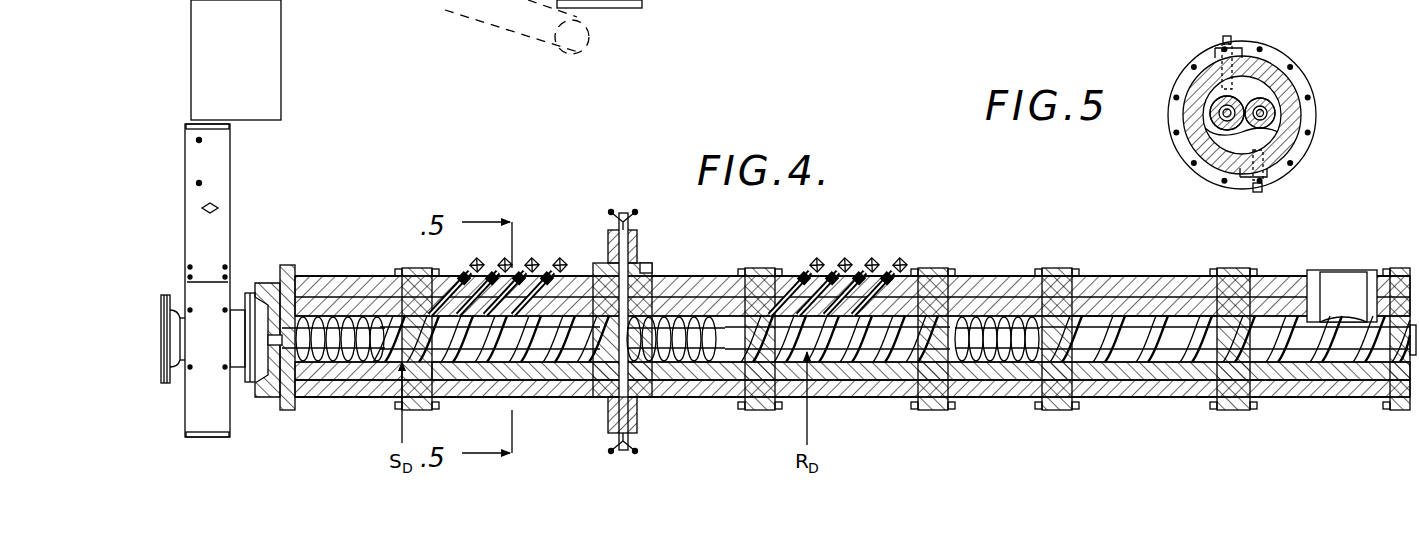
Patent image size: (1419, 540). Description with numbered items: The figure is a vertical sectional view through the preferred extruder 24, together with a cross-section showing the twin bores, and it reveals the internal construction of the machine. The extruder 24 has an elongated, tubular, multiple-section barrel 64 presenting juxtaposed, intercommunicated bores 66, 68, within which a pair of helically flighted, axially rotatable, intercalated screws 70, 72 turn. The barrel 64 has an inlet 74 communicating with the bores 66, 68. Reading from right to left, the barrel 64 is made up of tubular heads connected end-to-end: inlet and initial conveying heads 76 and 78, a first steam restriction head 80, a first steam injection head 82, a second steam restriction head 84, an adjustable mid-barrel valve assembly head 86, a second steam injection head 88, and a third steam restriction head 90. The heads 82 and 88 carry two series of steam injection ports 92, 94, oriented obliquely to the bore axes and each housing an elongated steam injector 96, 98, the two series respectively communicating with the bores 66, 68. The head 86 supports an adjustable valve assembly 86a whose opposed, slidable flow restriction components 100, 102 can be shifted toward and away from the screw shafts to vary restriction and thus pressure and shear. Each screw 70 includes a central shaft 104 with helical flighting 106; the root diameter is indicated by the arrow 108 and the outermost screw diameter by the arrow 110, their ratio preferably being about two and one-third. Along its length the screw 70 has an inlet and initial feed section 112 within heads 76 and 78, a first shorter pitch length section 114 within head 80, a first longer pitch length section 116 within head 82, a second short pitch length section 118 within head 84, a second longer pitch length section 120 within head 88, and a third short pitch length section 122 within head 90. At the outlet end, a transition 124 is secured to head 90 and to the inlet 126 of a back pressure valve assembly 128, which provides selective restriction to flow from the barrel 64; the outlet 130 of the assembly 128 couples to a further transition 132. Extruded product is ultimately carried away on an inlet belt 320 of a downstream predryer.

In FIG. 4, the extruder 24 is at (925, 218).
In FIG. 4, the barrel 64 is at (1013, 265).
In FIG. 5, the bore 66 is at (1282, 130).
In FIG. 5, the bore 68 is at (1212, 86).
In FIG. 4, the screw 70 is at (1140, 330).
In FIG. 5, the screw 70 is at (1215, 132).
In FIG. 5, the screw 72 is at (1270, 110).
In FIG. 4, the inlet 74 is at (1345, 282).
In FIG. 4, the inlet head 76 is at (1360, 397).
In FIG. 4, the initial conveying head 78 is at (1178, 397).
In FIG. 4, the first steam restriction head 80 is at (1025, 397).
In FIG. 4, the first steam injection head 82 is at (897, 397).
In FIG. 4, the second steam restriction head 84 is at (725, 397).
In FIG. 4, the adjustable mid-barrel valve assembly head 86 is at (640, 262).
In FIG. 4, the adjustable valve assembly 86a is at (618, 232).
In FIG. 4, the second steam injection head 88 is at (543, 397).
In FIG. 5, the second steam injection head 88 is at (1265, 68).
In FIG. 4, the third steam restriction head 90 is at (330, 399).
In FIG. 4, the steam injection ports 92 is at (828, 265).
In FIG. 4, the steam injection ports 94 is at (516, 266).
In FIG. 5, the steam injection ports 94 is at (1210, 50).
In FIG. 4, the steam injector 96 is at (870, 260).
In FIG. 4, the steam injector 98 is at (566, 258).
In FIG. 5, the steam injector 98 is at (1230, 44).
In FIG. 4, the flow restriction component 100 is at (640, 292).
In FIG. 4, the flow restriction component 102 is at (605, 400).
In FIG. 4, the central shaft 104 is at (333, 339).
In FIG. 5, the central shaft 104 is at (1222, 115).
In FIG. 4, the helical flighting 106 is at (1283, 325).
In FIG. 4, the arrow indicating root diameter 108 is at (805, 424).
In FIG. 4, the arrow indicating outermost screw diameter 110 is at (400, 428).
In FIG. 4, the inlet and initial feed section 112 is at (1292, 364).
In FIG. 4, the first shorter pitch length section 114 is at (978, 364).
In FIG. 4, the first longer pitch length section 116 is at (835, 362).
In FIG. 4, the second short pitch length section 118 is at (655, 398).
In FIG. 4, the second longer pitch length section 120 is at (460, 364).
In FIG. 4, the third short pitch length section 122 is at (343, 305).
In FIG. 4, the transition 124 is at (267, 392).
In FIG. 4, the inlet 126 is at (248, 295).
In FIG. 4, the back pressure valve assembly 128 is at (282, 150).
In FIG. 4, the outlet 130 is at (170, 380).
In FIG. 4, the transition 132 is at (168, 300).
In FIG. 4, the inlet belt 320 is at (498, 38).